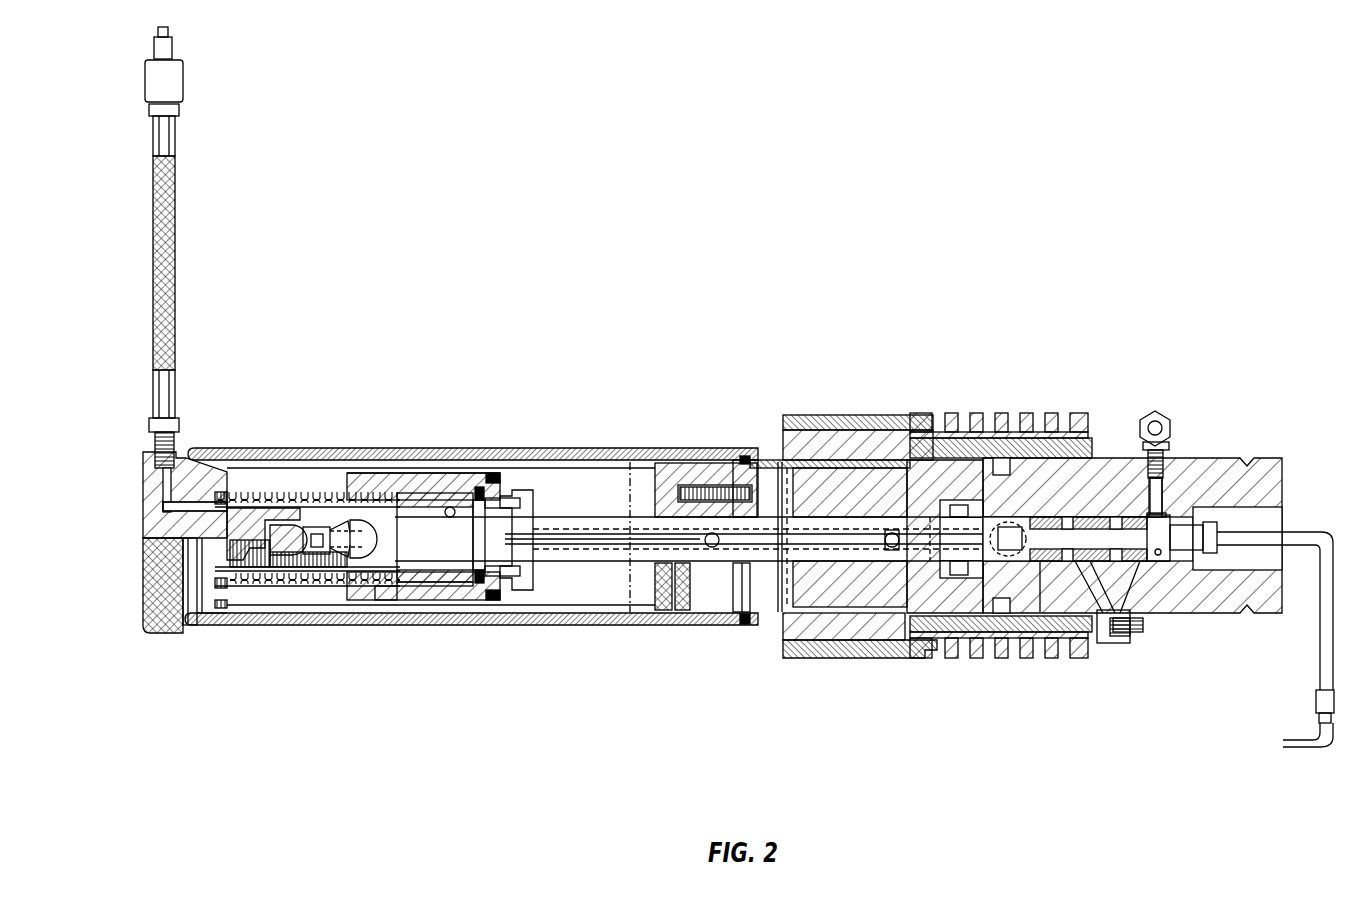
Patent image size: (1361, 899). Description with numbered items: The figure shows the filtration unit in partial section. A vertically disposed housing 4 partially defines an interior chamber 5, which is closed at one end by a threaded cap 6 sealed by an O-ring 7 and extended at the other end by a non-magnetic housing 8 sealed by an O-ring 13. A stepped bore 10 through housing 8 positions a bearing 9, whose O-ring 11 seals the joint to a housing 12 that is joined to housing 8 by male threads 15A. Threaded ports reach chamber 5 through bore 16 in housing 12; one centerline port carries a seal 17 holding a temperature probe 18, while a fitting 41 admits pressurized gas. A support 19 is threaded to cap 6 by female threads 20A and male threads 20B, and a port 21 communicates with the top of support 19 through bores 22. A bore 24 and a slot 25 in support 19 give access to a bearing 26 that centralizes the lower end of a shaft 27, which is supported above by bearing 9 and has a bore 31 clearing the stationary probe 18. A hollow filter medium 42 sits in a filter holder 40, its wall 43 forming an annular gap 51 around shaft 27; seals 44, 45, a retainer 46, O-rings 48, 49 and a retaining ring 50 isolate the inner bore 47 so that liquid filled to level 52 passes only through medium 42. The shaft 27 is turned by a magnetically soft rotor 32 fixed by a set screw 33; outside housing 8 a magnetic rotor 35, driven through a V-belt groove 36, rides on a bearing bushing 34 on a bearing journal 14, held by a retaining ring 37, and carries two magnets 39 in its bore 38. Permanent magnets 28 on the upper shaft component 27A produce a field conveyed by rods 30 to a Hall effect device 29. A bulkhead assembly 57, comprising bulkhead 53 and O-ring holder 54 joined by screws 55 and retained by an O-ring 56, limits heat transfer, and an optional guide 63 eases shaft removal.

The housing 4 is at (230, 628).
The interior chamber 5 is at (612, 470).
The cap 6 is at (149, 630).
The O-ring 7 is at (220, 490).
The housing 8 is at (770, 470).
The bearing 9 is at (940, 595).
The bore 10 is at (905, 452).
The O-ring 11 is at (972, 500).
The housing 12 is at (1205, 460).
The O-ring 13 is at (745, 456).
The bearing journal 14 is at (1118, 455).
The male threads 15A is at (962, 575).
The bore 16 is at (1178, 558).
The seal 17 is at (1210, 560).
The temperature probe 18 is at (524, 585).
The support 19 is at (278, 492).
The female threads 20A is at (240, 518).
The male threads 20B is at (195, 506).
The port 21 is at (153, 447).
The bores 22 is at (241, 508).
The bore 24 is at (356, 475).
The slot 25 is at (292, 562).
The bearing 26 is at (320, 520).
The shaft 27 is at (577, 570).
The upper shaft component 27A is at (1040, 613).
The permanent magnets 28 is at (1098, 525).
The Hall effect device 29 is at (1113, 645).
The magnetically soft rods 30 is at (1140, 600).
The bore 31 is at (578, 566).
The rotor 32 is at (834, 600).
The set screw 33 is at (891, 550).
The bearing bushing 34 is at (1077, 648).
The magnetic rotor 35 is at (1012, 418).
The V-belt groove 36 is at (985, 500).
The retaining ring 37 is at (1105, 520).
The bore 38 is at (925, 600).
The magnets 39 is at (793, 628).
The filter holder 40 is at (368, 555).
The fitting 41 is at (1172, 416).
The filter medium 42 is at (436, 588).
The filter medium wall 43 is at (468, 496).
The annular seal 44 is at (340, 548).
The annular seal 45 is at (490, 493).
The retainer 46 is at (479, 584).
The inner bore 47 is at (433, 500).
The O-ring 48 is at (495, 500).
The O-ring 49 is at (400, 475).
The retaining ring 50 is at (495, 480).
The annular gap 51 is at (390, 602).
The fluid level 52 is at (600, 552).
The bulkhead 53 is at (632, 575).
The O-ring holder 54 is at (740, 595).
The screws 55 is at (700, 490).
The O-ring 56 is at (760, 456).
The bulkhead assembly 57 is at (665, 480).
The guide 63 is at (533, 510).